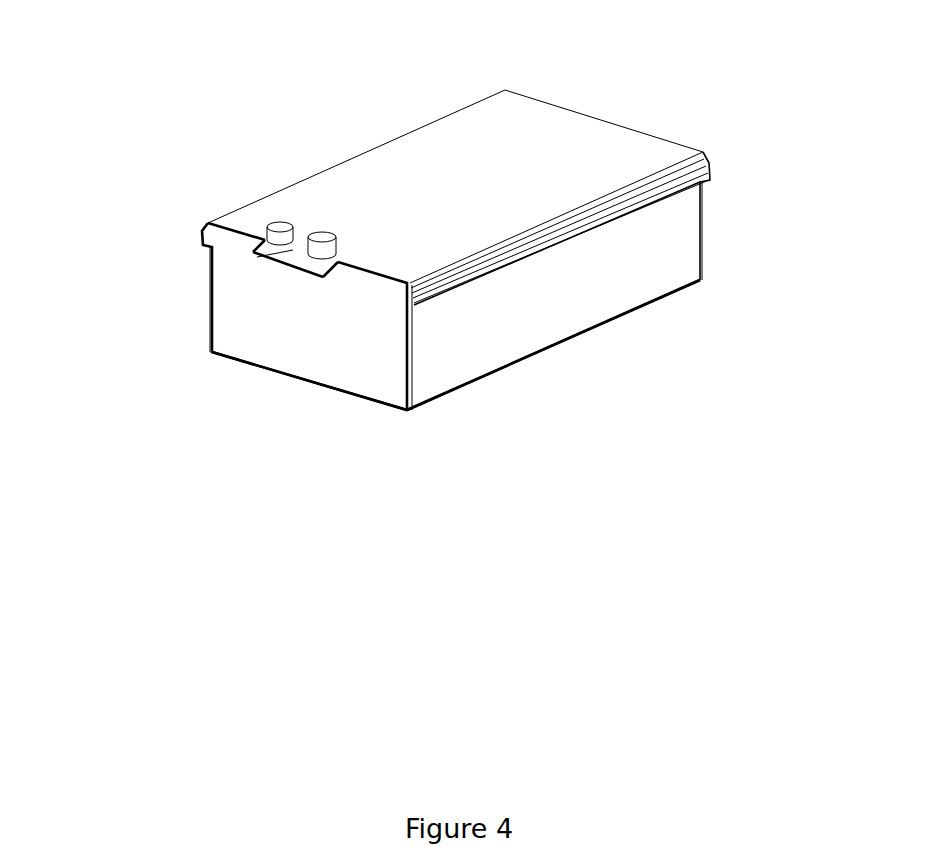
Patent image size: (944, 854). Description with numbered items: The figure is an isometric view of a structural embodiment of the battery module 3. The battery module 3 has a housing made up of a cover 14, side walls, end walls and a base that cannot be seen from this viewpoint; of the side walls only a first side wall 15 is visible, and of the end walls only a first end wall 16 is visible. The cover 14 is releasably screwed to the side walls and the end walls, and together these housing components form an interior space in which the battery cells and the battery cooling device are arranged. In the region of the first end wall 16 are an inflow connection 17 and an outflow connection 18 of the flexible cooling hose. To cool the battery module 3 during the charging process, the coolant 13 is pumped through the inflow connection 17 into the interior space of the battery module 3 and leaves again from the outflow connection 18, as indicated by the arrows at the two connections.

The battery module 3 is at (135, 74).
The coolant 13 is at (323, 233).
The cover 14 is at (628, 147).
The first side wall 15 is at (670, 250).
The first end wall 16 is at (390, 373).
The inflow connection 17 is at (252, 250).
The outflow connection 18 is at (300, 267).